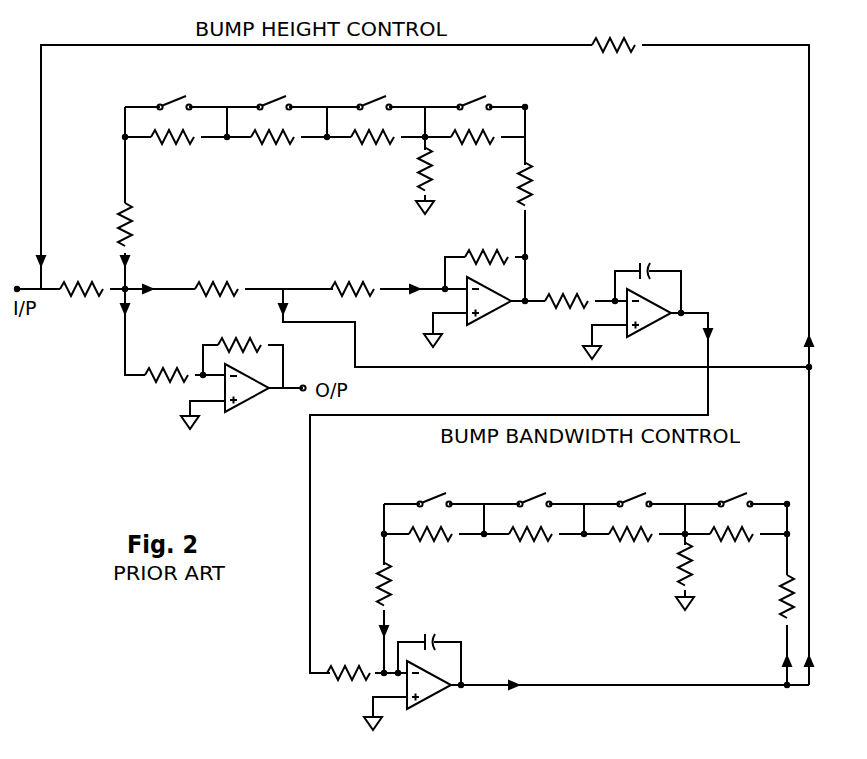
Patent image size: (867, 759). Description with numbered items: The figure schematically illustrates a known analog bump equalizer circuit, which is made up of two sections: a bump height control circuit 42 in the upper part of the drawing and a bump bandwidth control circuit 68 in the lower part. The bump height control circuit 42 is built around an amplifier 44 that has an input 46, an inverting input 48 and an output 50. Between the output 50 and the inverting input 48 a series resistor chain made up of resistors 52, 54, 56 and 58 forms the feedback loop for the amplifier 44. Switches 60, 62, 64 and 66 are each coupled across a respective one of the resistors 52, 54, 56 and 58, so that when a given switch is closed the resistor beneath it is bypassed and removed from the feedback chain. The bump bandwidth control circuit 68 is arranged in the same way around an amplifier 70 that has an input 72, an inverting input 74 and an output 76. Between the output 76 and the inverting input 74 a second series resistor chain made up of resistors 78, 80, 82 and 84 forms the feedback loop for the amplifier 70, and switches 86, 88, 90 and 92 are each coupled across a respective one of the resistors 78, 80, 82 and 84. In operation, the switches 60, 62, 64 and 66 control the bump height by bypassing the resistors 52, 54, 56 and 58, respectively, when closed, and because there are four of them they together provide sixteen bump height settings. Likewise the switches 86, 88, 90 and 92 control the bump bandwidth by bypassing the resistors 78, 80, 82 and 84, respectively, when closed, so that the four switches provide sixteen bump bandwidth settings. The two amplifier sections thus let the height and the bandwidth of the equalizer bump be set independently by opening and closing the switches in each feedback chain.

The bump height control circuit 42 is at (292, 241).
The amplifier 44 is at (486, 318).
The input 46 is at (464, 313).
The inverting input 48 is at (444, 286).
The output 50 is at (529, 295).
The resistor 52 is at (180, 146).
The resistor 54 is at (280, 146).
The resistor 56 is at (381, 146).
The resistor 58 is at (481, 146).
The switch 60 is at (174, 100).
The switch 62 is at (274, 100).
The switch 64 is at (374, 100).
The switch 66 is at (474, 100).
The bump bandwidth control circuit 68 is at (570, 628).
The amplifier 70 is at (430, 698).
The input 72 is at (392, 700).
The inverting input 74 is at (383, 668).
The output 76 is at (464, 683).
The resistor 78 is at (438, 542).
The resistor 80 is at (538, 542).
The resistor 82 is at (638, 542).
The resistor 84 is at (740, 542).
The switch 86 is at (434, 497).
The switch 88 is at (534, 497).
The switch 90 is at (634, 497).
The switch 92 is at (735, 497).